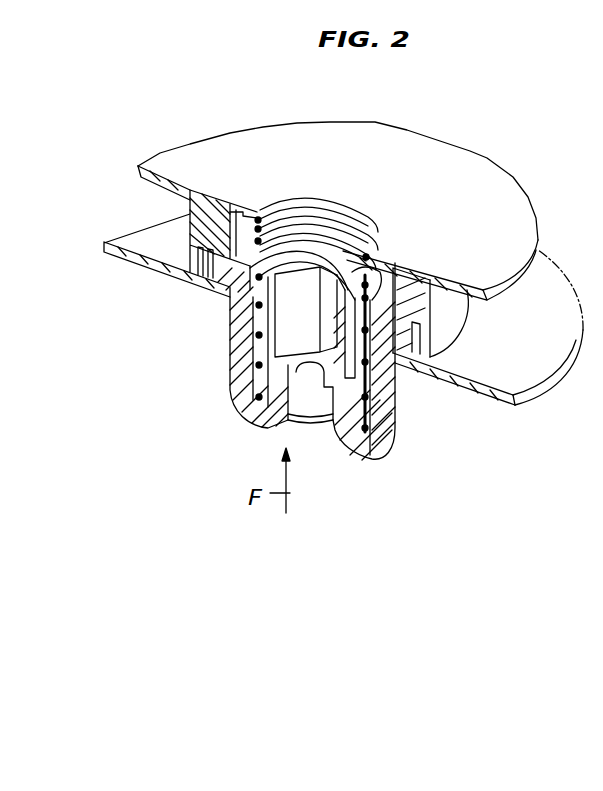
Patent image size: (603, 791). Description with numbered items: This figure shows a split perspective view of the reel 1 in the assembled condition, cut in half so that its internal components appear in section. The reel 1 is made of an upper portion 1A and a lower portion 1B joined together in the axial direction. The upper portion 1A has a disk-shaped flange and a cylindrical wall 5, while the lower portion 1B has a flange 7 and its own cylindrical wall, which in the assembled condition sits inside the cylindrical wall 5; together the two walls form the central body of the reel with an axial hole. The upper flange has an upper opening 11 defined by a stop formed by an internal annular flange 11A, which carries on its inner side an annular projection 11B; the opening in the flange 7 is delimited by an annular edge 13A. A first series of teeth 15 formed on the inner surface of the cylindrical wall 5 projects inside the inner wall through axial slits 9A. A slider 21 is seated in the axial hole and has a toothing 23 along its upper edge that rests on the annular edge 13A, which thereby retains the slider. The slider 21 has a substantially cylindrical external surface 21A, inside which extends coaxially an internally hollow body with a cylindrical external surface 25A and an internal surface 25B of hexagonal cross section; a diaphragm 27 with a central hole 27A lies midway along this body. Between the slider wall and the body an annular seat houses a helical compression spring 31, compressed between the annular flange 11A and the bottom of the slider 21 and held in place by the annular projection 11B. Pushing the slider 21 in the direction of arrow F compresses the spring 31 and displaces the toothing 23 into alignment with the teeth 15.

The reel 1 is at (493, 153).
The upper portion of the reel 1A is at (219, 155).
The lower portion of the reel 1B is at (539, 398).
The cylindrical wall 5 is at (445, 330).
The flange 7 is at (128, 241).
The axial slits 9A is at (167, 277).
The upper opening 11 is at (307, 203).
The internal annular flange 11A is at (237, 213).
The annular projection 11B is at (190, 213).
The annular edge 13A is at (217, 290).
The first series of teeth 15 is at (200, 233).
The slider 21 is at (360, 467).
The cylindrical external surface 21A is at (403, 413).
The toothing 23 is at (195, 283).
The cylindrical external surface 25A is at (340, 330).
The internal surface 25B is at (313, 305).
The diaphragm 27 is at (304, 363).
The hole 27A is at (304, 375).
The helical compression spring 31 is at (352, 226).